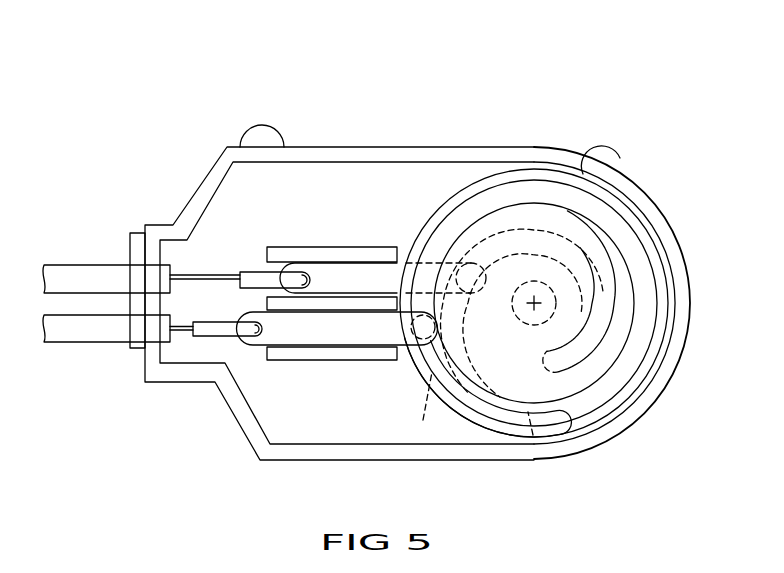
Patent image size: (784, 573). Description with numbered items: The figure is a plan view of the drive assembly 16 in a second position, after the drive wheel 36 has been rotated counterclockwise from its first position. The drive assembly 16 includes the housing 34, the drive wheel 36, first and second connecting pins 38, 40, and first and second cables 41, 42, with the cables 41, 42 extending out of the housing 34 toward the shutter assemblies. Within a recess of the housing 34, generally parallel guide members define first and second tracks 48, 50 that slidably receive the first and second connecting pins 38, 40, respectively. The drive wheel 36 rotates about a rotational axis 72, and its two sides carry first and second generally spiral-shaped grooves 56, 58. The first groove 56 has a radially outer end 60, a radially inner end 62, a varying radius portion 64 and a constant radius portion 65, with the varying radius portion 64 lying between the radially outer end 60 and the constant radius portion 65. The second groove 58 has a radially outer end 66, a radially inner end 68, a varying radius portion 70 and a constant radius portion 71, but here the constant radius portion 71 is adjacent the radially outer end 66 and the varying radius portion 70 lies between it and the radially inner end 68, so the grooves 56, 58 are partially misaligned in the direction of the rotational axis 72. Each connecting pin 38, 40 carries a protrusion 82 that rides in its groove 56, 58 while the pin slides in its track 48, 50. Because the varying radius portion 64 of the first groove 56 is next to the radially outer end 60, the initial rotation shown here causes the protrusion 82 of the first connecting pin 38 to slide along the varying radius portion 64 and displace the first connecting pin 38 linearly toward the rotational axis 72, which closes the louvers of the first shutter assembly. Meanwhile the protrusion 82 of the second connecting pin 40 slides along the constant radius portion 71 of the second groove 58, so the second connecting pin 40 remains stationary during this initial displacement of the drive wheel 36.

The drive assembly 16 is at (372, 102).
The housing 34 is at (563, 460).
The drive wheel 36 is at (604, 406).
The first connecting pin 38 is at (310, 255).
The second connecting pin 40 is at (295, 360).
The first cable 41 is at (212, 272).
The second cable 42 is at (183, 332).
The first track 48 is at (270, 248).
The second track 50 is at (310, 347).
The first groove 56 is at (514, 232).
The second groove 58 is at (615, 316).
The radially outer end 60 is at (533, 435).
The radially inner end 62 is at (577, 373).
The varying radius portion 64 is at (423, 420).
The constant radius portion 65 is at (603, 291).
The radially outer end 66 is at (594, 418).
The radially inner end 68 is at (612, 418).
The varying radius portion 70 is at (610, 243).
The constant radius portion 71 is at (443, 243).
The rotational axis 72 is at (534, 303).
The protrusion 82 is at (470, 263).